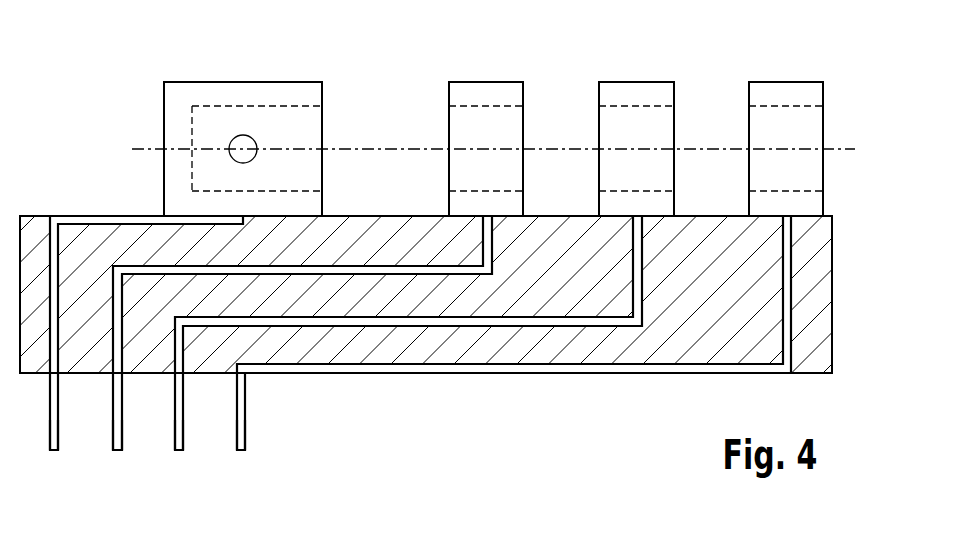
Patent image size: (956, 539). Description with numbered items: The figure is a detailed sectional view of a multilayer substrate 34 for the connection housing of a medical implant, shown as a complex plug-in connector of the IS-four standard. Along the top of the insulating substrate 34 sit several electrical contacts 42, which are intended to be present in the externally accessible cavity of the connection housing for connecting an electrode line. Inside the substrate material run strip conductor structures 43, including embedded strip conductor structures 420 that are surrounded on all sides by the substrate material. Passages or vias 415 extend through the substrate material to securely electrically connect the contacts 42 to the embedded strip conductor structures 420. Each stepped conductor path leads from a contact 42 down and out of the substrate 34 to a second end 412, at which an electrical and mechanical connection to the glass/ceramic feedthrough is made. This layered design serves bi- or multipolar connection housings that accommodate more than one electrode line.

The substrate 34 is at (347, 237).
The contacts 42 is at (242, 82).
The strip conductor structure 43 is at (92, 216).
The second ends of the strip conductor structure 412 is at (55, 432).
The passage/via in the substrate 415 is at (487, 249).
The embedded strip conductor structure 420 is at (383, 272).